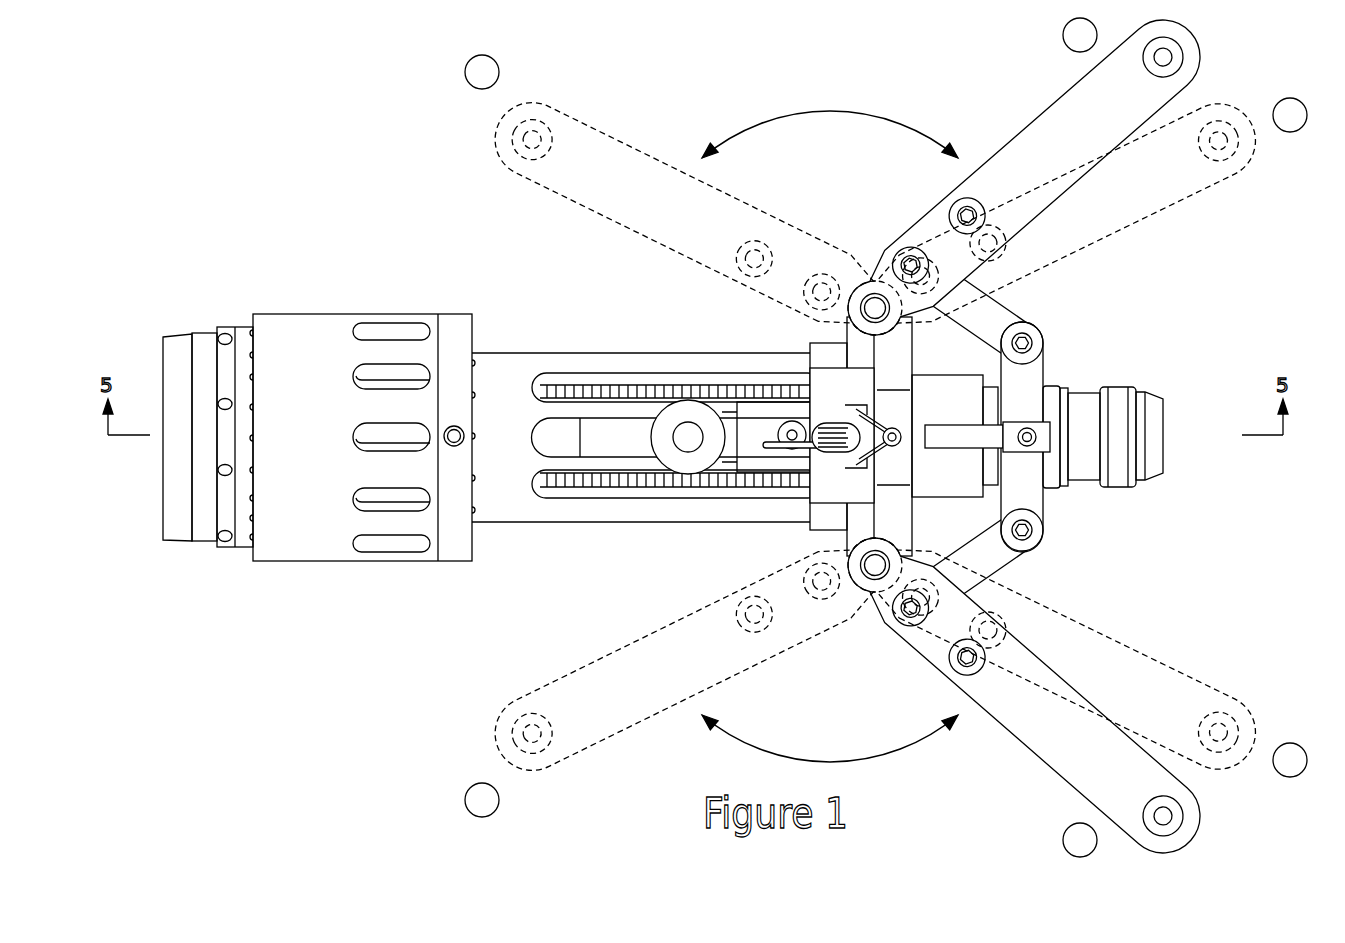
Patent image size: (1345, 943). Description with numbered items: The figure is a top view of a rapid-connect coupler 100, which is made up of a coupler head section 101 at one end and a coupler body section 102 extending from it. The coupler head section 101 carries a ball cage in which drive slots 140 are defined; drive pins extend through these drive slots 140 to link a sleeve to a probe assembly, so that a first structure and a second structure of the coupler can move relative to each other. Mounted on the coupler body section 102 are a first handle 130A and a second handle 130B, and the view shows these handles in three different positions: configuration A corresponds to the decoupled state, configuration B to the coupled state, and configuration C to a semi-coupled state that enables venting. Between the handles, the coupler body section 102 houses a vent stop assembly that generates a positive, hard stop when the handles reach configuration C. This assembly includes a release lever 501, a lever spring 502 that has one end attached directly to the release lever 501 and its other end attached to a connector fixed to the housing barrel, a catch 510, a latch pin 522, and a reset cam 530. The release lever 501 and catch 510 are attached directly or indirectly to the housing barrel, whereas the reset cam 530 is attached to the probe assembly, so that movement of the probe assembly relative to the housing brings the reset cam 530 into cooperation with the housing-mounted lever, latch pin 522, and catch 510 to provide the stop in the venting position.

The rapid-connect coupler 100 is at (1233, 305).
The coupler head section 101 is at (341, 298).
The coupler body section 102 is at (664, 318).
The first handle 130A is at (1198, 54).
The second handle 130B is at (1198, 820).
The drive slot 140 is at (368, 438).
The release lever 501 is at (747, 433).
The lever spring 502 is at (820, 458).
The catch 510 is at (882, 447).
The latch pin 522 is at (867, 443).
The reset cam 530 is at (955, 437).